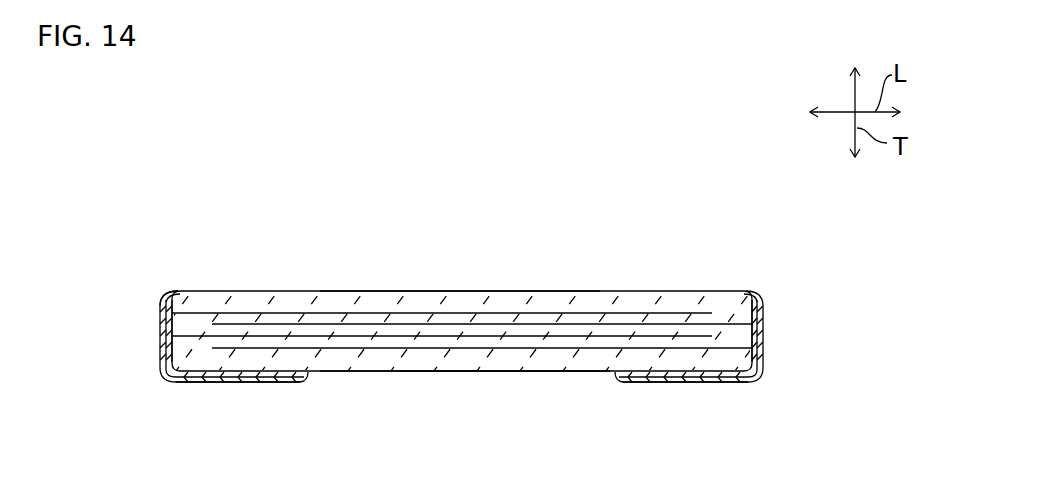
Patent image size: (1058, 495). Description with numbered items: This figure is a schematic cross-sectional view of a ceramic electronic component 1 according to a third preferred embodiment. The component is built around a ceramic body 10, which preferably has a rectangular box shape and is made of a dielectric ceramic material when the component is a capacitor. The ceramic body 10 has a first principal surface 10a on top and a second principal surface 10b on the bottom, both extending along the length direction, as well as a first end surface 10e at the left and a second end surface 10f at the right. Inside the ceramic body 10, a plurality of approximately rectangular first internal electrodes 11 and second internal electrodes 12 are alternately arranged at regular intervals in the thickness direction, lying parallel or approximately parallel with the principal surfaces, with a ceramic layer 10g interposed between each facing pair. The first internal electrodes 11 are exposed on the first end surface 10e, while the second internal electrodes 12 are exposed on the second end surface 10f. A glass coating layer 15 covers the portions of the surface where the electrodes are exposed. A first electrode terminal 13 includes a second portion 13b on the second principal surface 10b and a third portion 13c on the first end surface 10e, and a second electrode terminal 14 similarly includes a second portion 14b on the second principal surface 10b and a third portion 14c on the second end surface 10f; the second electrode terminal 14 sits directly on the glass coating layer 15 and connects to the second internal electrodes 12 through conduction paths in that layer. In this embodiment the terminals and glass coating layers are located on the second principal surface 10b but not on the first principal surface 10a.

The ceramic electronic component 1 is at (645, 225).
The ceramic body 10 is at (523, 289).
The first principal surface 10a is at (438, 290).
The second principal surface 10b is at (467, 372).
The first end surface 10e is at (162, 357).
The second end surface 10f is at (760, 355).
The ceramic layer 10g is at (553, 340).
The first internal electrode 11 is at (377, 312).
The second internal electrode 12 is at (362, 350).
The first electrode terminal 13 is at (157, 325).
The second portion of first electrode terminal 13b is at (228, 382).
The third portion of first electrode terminal 13c is at (157, 313).
The second electrode terminal 14 is at (767, 303).
The second portion of second electrode terminal 14b is at (693, 382).
The third portion of second electrode terminal 14c is at (763, 333).
The glass coating layer 15 is at (161, 306).